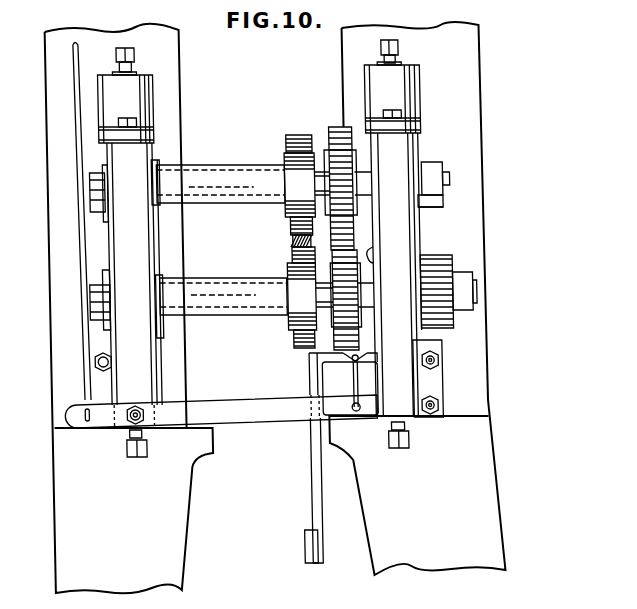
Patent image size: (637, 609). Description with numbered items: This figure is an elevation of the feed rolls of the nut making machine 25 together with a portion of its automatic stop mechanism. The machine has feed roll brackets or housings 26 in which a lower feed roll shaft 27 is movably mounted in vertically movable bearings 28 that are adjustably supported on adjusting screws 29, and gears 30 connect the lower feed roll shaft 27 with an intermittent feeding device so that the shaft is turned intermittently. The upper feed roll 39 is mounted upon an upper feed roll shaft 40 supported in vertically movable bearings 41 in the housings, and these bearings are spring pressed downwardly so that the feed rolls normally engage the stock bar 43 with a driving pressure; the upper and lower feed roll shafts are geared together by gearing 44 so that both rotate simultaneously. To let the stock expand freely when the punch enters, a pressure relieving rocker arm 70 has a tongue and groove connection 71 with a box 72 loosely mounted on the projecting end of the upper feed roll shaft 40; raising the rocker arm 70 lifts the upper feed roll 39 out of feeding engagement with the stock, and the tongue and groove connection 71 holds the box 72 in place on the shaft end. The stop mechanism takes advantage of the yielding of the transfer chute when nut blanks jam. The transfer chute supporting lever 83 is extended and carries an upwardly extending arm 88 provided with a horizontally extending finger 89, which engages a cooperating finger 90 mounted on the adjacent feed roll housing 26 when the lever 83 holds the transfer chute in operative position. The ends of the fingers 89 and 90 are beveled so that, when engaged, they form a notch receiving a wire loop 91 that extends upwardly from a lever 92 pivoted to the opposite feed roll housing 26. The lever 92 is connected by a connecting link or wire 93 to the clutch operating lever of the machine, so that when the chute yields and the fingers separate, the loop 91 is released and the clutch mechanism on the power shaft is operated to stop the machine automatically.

The machine 25 is at (447, 415).
The feed roll brackets or housings 26 is at (127, 383).
The lower feed roll shaft 27 is at (231, 315).
The vertically movable bearings 28 is at (157, 278).
The adjusting screws 29 is at (138, 442).
The gears 30 is at (447, 262).
The upper feed roll 39 is at (292, 137).
The upper feed roll shaft 40 is at (214, 175).
The vertically movable bearings 41 is at (157, 160).
The stock bar 43 is at (285, 240).
The gearing 44 is at (346, 231).
The pressure relieving rocker arm 70 is at (419, 205).
The tongue and groove connection 71 is at (432, 210).
The box 72 is at (430, 165).
The transfer chute supporting lever 83 is at (296, 553).
The upwardly extending arm 88 is at (312, 527).
The horizontally extending finger 89 is at (313, 358).
The cooperating finger 90 is at (350, 362).
The wire loop 91 is at (343, 380).
The lever 92 is at (245, 412).
The connecting link or wire 93 is at (78, 250).